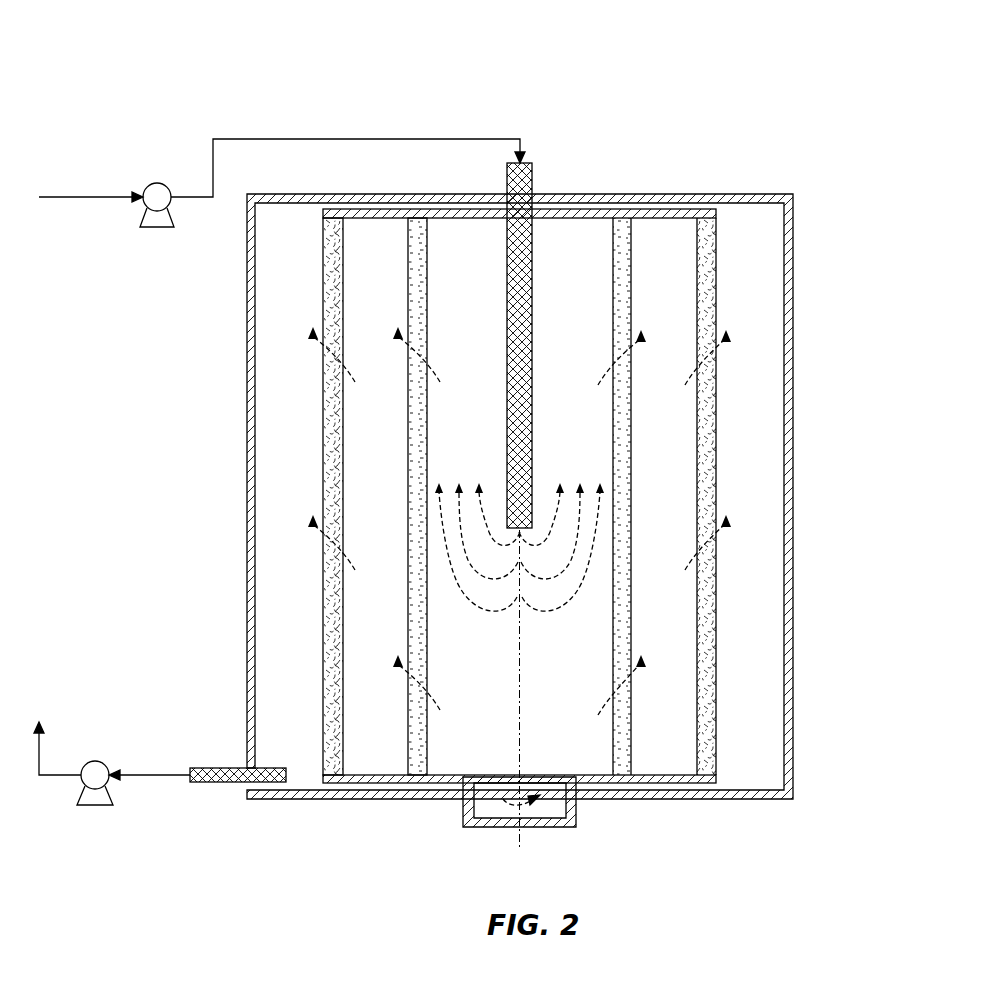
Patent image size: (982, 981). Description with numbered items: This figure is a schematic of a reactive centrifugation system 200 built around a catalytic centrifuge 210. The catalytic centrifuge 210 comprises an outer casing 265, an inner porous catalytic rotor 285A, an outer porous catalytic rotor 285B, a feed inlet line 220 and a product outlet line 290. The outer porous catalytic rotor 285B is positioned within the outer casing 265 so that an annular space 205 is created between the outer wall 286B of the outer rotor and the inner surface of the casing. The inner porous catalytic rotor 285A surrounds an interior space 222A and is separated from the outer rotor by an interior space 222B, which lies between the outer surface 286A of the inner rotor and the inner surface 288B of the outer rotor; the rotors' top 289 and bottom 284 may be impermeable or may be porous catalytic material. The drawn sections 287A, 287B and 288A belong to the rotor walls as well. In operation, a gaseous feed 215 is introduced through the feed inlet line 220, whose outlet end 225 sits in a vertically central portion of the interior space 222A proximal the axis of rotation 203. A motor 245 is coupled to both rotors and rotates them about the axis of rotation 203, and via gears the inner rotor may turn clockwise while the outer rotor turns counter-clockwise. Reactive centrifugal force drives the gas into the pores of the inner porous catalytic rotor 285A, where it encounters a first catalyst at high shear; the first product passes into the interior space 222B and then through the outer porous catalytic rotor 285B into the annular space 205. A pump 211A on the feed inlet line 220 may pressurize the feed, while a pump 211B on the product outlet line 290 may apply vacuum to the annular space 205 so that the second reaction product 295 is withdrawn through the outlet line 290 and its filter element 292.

The system 200 is at (137, 58).
The axis of rotation 203 is at (519, 843).
The annular space 205 is at (770, 389).
The catalytic centrifuge 210 is at (207, 458).
The pump 211A is at (157, 183).
The pump 211B is at (95, 760).
The gaseous feed 215 is at (367, 139).
The feed inlet line 220 is at (530, 183).
The interior space 222A is at (597, 329).
The interior space 222B is at (688, 311).
The outlet end 225 is at (533, 458).
The motor 245 is at (578, 810).
The outer casing 265 is at (795, 362).
The bottom 284 is at (398, 783).
The inner porous catalytic rotor 285A is at (628, 263).
The outer porous catalytic rotor 285B is at (708, 295).
The outer surface 286A is at (628, 460).
The outer wall 286B is at (713, 500).
The third filter section A 287A is at (626, 616).
The third filter section B 287B is at (710, 670).
The fourth filter section A 288A is at (612, 641).
The inner surface 288B is at (697, 713).
The top 289 is at (655, 209).
The product outlet line 290 is at (218, 768).
The outlet filter 292 is at (273, 768).
The second reaction product 295 is at (165, 777).